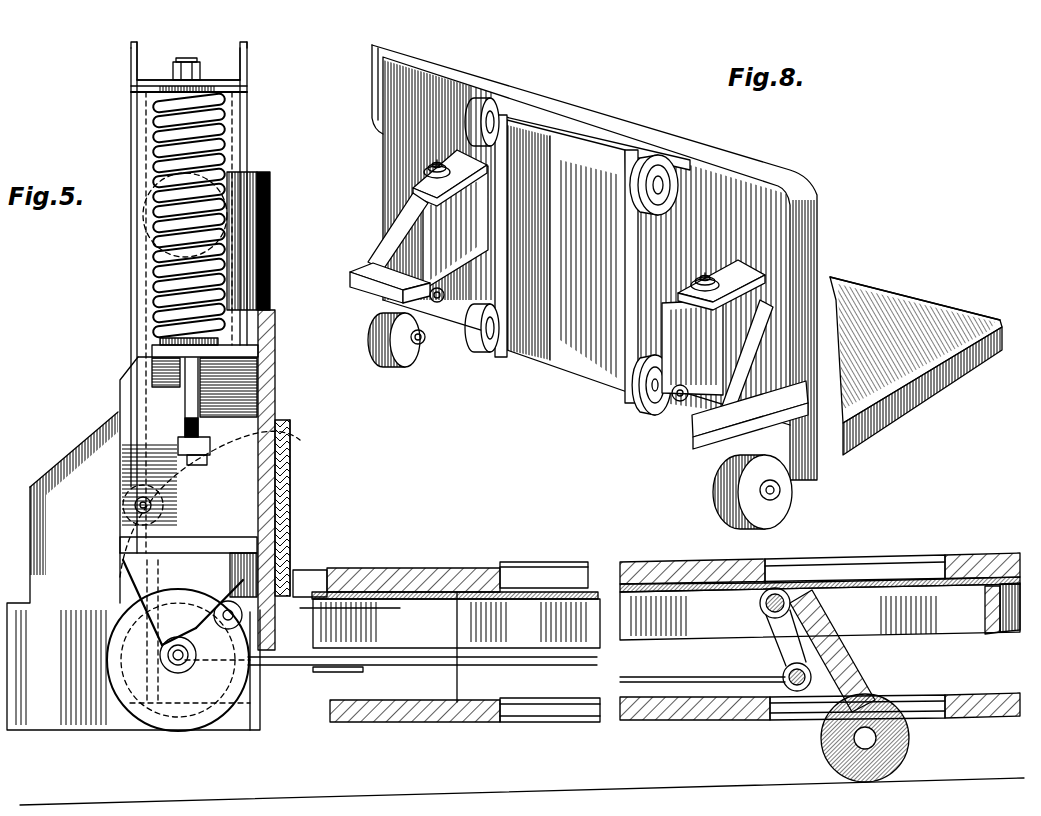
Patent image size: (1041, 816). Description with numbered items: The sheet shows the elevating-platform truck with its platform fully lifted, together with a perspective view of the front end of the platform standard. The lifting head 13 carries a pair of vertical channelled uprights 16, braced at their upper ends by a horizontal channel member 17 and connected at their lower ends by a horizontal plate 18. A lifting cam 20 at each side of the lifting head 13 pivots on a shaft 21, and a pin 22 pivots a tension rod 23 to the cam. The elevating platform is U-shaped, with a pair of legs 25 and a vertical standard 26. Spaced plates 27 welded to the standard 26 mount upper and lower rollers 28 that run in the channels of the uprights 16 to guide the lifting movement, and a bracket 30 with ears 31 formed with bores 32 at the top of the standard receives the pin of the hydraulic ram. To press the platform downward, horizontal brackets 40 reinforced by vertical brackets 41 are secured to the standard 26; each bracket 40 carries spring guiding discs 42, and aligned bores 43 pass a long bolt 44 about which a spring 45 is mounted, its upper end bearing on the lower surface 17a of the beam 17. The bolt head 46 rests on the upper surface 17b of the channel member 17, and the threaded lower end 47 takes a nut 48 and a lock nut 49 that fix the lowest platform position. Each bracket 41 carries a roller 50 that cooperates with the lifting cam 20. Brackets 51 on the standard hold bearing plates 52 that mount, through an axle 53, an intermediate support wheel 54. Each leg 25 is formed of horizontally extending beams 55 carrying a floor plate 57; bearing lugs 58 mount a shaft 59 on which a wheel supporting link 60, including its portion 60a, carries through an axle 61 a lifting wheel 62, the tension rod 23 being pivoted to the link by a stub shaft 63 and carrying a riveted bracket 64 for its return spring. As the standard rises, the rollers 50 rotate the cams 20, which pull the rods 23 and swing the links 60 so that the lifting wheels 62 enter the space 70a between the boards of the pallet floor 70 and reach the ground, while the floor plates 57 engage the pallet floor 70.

In FIG. 5, the lifting head 13 is at (35, 730).
In FIG. 5, the vertical channelled upright 16 is at (133, 286).
In FIG. 5, the horizontal channel member 17 is at (247, 52).
In FIG. 5, the lower surface of beam 17a is at (240, 88).
In FIG. 5, the upper surface of channel beam 17b is at (200, 62).
In FIG. 5, the horizontal plate 18 is at (170, 700).
In FIG. 5, the lifting cam 20 is at (135, 478).
In FIG. 5, the shaft 21 is at (300, 580).
In FIG. 5, the pin 22 is at (185, 662).
In FIG. 5, the tension rod 23 is at (275, 668).
In FIG. 5, the leg 25 is at (522, 590).
In FIG. 8, the leg 25 is at (845, 272).
In FIG. 5, the vertical standard 26 is at (270, 276).
In FIG. 8, the vertical standard 26 is at (762, 160).
In FIG. 8, the spaced plates 27 is at (640, 268).
In FIG. 5, the roller 28 is at (152, 238).
In FIG. 8, the roller 28 is at (500, 118).
In FIG. 8, the bracket 30 is at (590, 112).
In FIG. 8, the ear 31 is at (540, 130).
In FIG. 8, the bore 32 is at (590, 175).
In FIG. 5, the horizontal bracket 40 is at (258, 351).
In FIG. 8, the horizontal bracket 40 is at (455, 150).
In FIG. 5, the vertical bracket 41 is at (258, 386).
In FIG. 8, the vertical bracket 41 is at (460, 243).
In FIG. 5, the spring guiding disc 42 is at (225, 340).
In FIG. 8, the spring guiding disc 42 is at (424, 172).
In FIG. 8, the aligned bore 43 is at (434, 163).
In FIG. 5, the long bolt 44 is at (258, 366).
In FIG. 5, the spring 45 is at (222, 158).
In FIG. 5, the bolt head 46 is at (180, 62).
In FIG. 5, the threaded lower end 47 is at (185, 425).
In FIG. 5, the nut 48 is at (210, 447).
In FIG. 5, the lock nut 49 is at (292, 440).
In FIG. 5, the lifting roller 50 is at (135, 506).
In FIG. 8, the lifting roller 50 is at (440, 305).
In FIG. 5, the brackets 51 is at (232, 510).
In FIG. 8, the brackets 51 is at (360, 268).
In FIG. 5, the bearing plate 52 is at (130, 605).
In FIG. 8, the bearing plate 52 is at (378, 292).
In FIG. 5, the axle 53 is at (160, 640).
In FIG. 8, the axle 53 is at (418, 345).
In FIG. 5, the intermediate support wheel 54 is at (112, 658).
In FIG. 8, the intermediate support wheel 54 is at (385, 358).
In FIG. 5, the horizontally extending beam 55 is at (672, 600).
In FIG. 8, the horizontally extending beam 55 is at (918, 395).
In FIG. 5, the floor plate 57 is at (595, 590).
In FIG. 8, the floor plate 57 is at (888, 329).
In FIG. 5, the bearing lug 58 is at (826, 540).
In FIG. 5, the shaft 59 is at (775, 592).
In FIG. 5, the wheel supporting link 60 is at (835, 660).
In FIG. 5, the arm end 60a is at (905, 718).
In FIG. 5, the axle 61 is at (876, 740).
In FIG. 5, the lifting wheel 62 is at (900, 766).
In FIG. 5, the stub shaft 63 is at (785, 672).
In FIG. 5, the bracket 64 is at (355, 672).
In FIG. 5, the pallet floor 70 is at (658, 562).
In FIG. 5, the space 70a is at (925, 695).